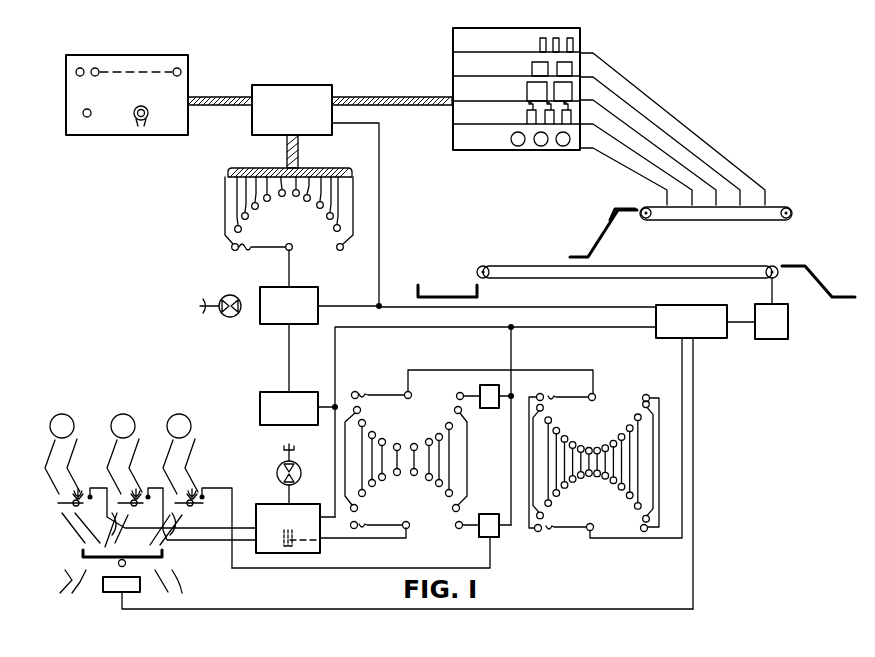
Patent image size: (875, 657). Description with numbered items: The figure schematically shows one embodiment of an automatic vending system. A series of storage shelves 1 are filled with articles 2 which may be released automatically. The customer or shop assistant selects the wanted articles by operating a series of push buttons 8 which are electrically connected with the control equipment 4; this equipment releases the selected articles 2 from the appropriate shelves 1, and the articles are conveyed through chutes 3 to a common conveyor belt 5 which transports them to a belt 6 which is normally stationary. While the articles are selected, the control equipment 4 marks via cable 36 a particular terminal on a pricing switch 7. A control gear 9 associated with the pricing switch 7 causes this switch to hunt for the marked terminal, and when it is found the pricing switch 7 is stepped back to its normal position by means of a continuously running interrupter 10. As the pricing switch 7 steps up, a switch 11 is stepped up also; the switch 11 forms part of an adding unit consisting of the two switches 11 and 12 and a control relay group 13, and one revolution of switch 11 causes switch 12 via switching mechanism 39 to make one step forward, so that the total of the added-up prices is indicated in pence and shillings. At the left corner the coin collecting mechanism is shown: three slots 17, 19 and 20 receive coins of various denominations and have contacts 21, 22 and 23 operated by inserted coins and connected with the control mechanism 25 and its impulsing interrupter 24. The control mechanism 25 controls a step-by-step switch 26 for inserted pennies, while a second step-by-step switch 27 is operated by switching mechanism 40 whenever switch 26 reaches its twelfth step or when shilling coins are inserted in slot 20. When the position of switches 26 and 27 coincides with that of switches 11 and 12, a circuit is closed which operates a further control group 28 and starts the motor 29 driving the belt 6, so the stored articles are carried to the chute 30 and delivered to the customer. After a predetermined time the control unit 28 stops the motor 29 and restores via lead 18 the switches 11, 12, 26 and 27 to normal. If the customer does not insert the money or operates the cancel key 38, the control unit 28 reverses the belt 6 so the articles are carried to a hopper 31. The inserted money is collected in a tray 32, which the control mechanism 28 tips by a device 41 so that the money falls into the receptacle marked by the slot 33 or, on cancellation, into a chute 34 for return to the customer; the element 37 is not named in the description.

The storage shelves 1 is at (452, 62).
The articles 2 is at (578, 58).
The chutes 3 is at (646, 103).
The control equipment 4 is at (286, 84).
The common conveyor belt 5 is at (772, 204).
The belt 6 is at (541, 265).
The pricing switch 7 is at (259, 247).
The push buttons 8 is at (94, 67).
The control gear 9 is at (274, 320).
The interrupter 10 is at (224, 315).
The switch 11 is at (371, 398).
The switch 12 is at (560, 399).
The control relay group 13 is at (259, 402).
The slot 17 is at (55, 458).
The lead 18 is at (608, 330).
The slot 19 is at (117, 458).
The slot 20 is at (175, 458).
The contact 21 is at (81, 504).
The contact 22 is at (139, 504).
The contact 23 is at (200, 504).
The impulsing interrupter 24 is at (298, 478).
The control mechanism 25 is at (272, 507).
The step-by-step switch 26 is at (382, 522).
The step-by-step switch 27 is at (570, 526).
The control group 28 is at (662, 306).
The motor 29 is at (788, 320).
The chute 30 is at (826, 290).
The hopper 31 is at (444, 294).
The tray 32 is at (165, 553).
The slot 33 is at (74, 568).
The chute 34 is at (180, 582).
The cable 36 is at (286, 167).
The socket 37 is at (147, 120).
The cancel key 38 is at (85, 118).
The switching mechanism 39 is at (486, 402).
The switching mechanism 40 is at (497, 532).
The device 41 is at (110, 592).